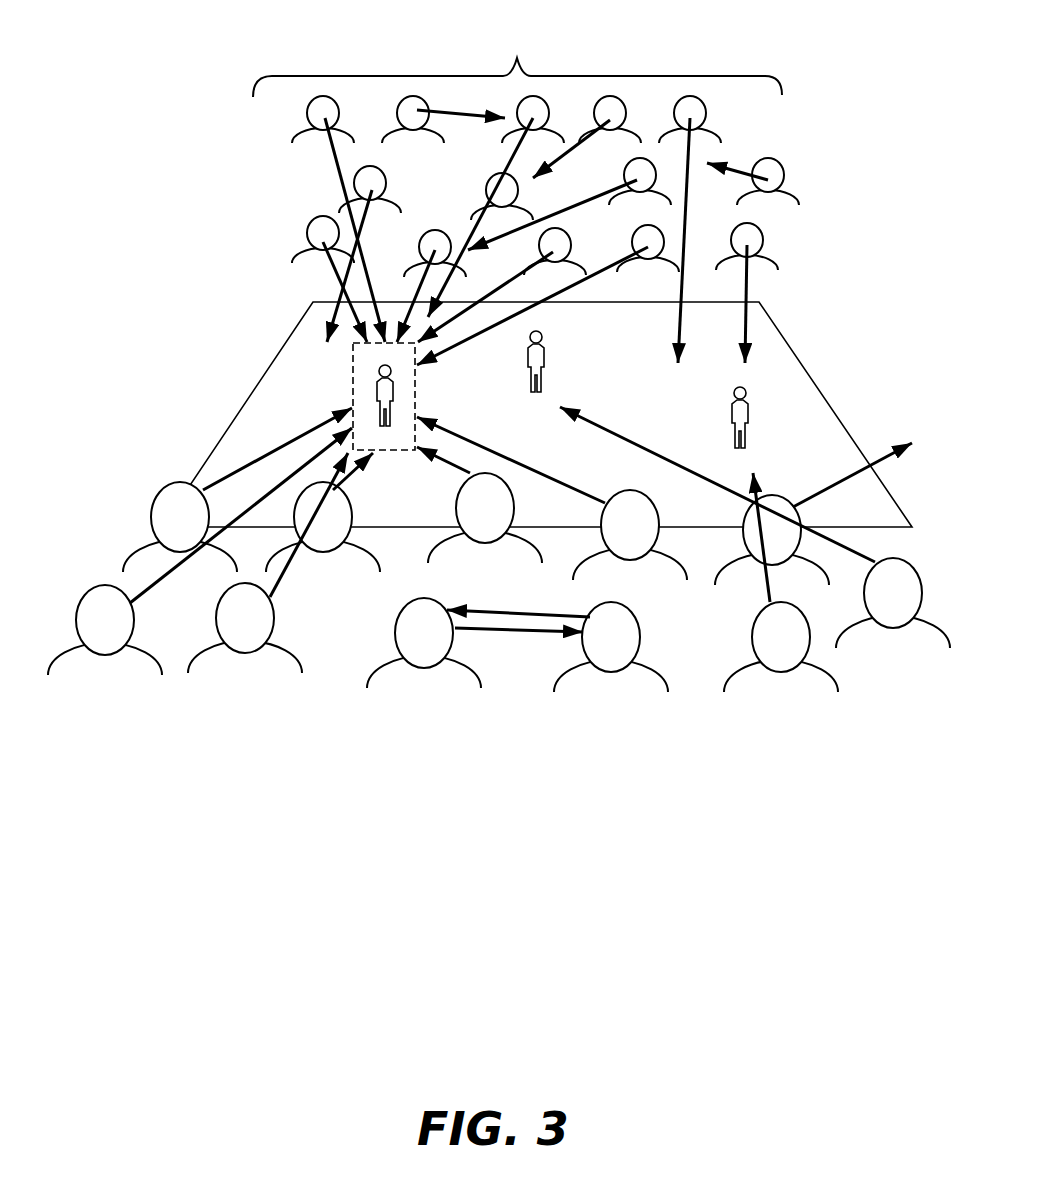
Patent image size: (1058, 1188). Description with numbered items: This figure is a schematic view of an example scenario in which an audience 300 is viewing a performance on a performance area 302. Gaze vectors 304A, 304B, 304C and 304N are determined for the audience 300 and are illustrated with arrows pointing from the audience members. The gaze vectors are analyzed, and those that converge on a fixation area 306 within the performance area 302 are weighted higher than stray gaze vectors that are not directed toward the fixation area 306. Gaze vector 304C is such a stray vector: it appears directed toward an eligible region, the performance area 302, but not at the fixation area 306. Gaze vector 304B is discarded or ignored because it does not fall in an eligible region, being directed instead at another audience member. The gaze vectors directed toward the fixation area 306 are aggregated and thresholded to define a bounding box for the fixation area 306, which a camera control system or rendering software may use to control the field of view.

The audience 300 is at (517, 60).
The performance area 302 is at (845, 416).
The gaze vector 304A is at (507, 448).
The gaze vector 304B is at (507, 632).
The gaze vector 304C is at (747, 283).
The gaze vector 304N is at (328, 173).
The fixation area 306 is at (353, 368).